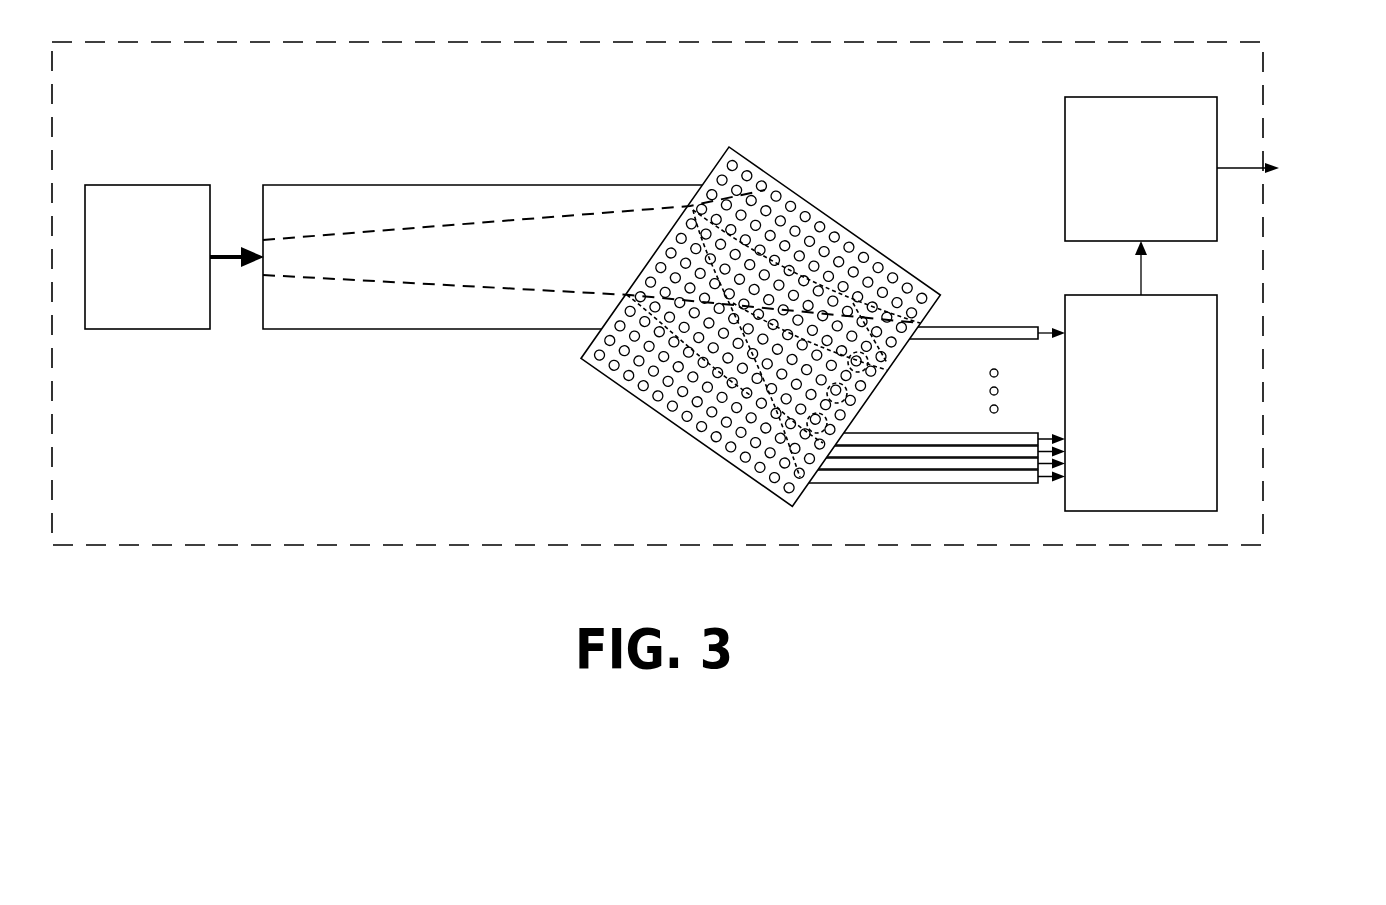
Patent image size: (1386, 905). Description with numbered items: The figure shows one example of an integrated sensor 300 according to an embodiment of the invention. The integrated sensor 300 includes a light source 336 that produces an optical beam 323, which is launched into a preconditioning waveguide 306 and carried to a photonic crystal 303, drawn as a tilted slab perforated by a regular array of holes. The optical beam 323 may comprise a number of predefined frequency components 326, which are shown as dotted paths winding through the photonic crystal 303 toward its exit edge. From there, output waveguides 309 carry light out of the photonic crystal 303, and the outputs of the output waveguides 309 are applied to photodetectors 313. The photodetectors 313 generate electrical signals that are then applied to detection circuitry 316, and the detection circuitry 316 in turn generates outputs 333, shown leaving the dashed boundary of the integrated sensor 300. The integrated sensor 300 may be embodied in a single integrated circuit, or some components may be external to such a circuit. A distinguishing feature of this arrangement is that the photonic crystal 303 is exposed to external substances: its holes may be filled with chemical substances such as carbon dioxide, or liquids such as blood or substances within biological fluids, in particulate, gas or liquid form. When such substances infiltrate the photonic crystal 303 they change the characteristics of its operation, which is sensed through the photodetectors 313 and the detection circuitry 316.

The integrated sensor 300 is at (486, 124).
The photonic crystal 303 is at (877, 248).
The preconditioning waveguide 306 is at (388, 330).
The output waveguides 309 is at (917, 486).
The photodetectors 313 is at (1122, 442).
The detection circuitry 316 is at (1122, 209).
The optical beam 323 is at (230, 255).
The predefined frequency components 326 is at (870, 333).
The outputs 333 is at (1312, 196).
The light source 336 is at (128, 297).